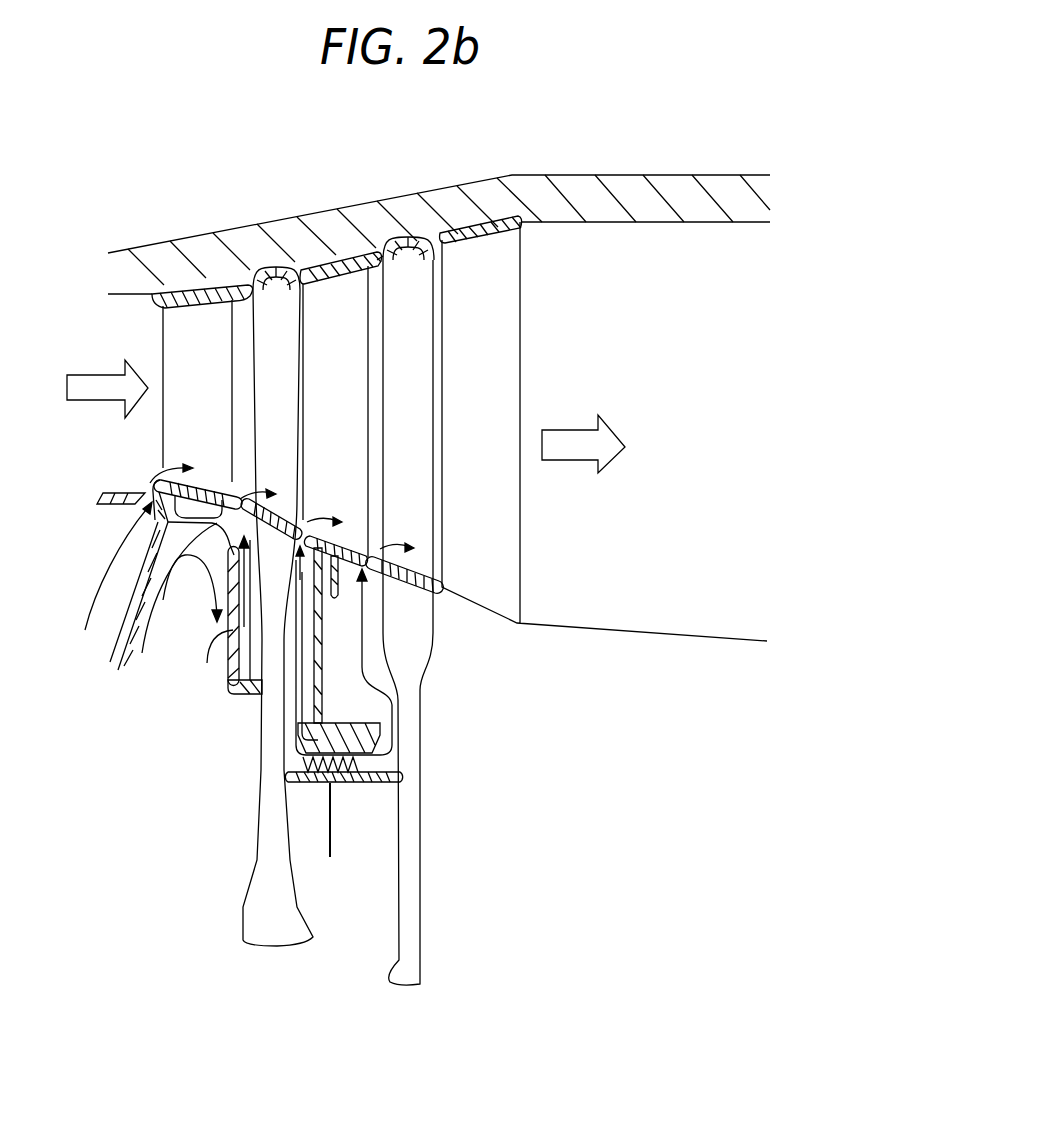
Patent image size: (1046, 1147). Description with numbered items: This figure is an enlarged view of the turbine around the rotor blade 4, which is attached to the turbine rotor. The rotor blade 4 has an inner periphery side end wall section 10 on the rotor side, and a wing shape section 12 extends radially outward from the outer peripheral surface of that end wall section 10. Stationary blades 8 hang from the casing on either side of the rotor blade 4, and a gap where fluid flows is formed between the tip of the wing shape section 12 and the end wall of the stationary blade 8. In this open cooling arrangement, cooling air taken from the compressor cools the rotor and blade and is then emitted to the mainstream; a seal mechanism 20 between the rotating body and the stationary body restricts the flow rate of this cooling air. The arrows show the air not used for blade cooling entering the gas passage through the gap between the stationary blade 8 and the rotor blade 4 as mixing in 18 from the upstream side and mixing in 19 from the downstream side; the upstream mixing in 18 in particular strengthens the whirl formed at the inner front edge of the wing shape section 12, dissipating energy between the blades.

The rotor blade 4 is at (272, 350).
The stationary blade 8 is at (197, 325).
The inner periphery side end wall section 10 is at (288, 513).
The wing shape section 12 is at (289, 399).
The mixing in from the upstream side 18 is at (246, 572).
The mixing in from the downstream side 19 is at (322, 531).
The seal mechanism 20 is at (349, 783).